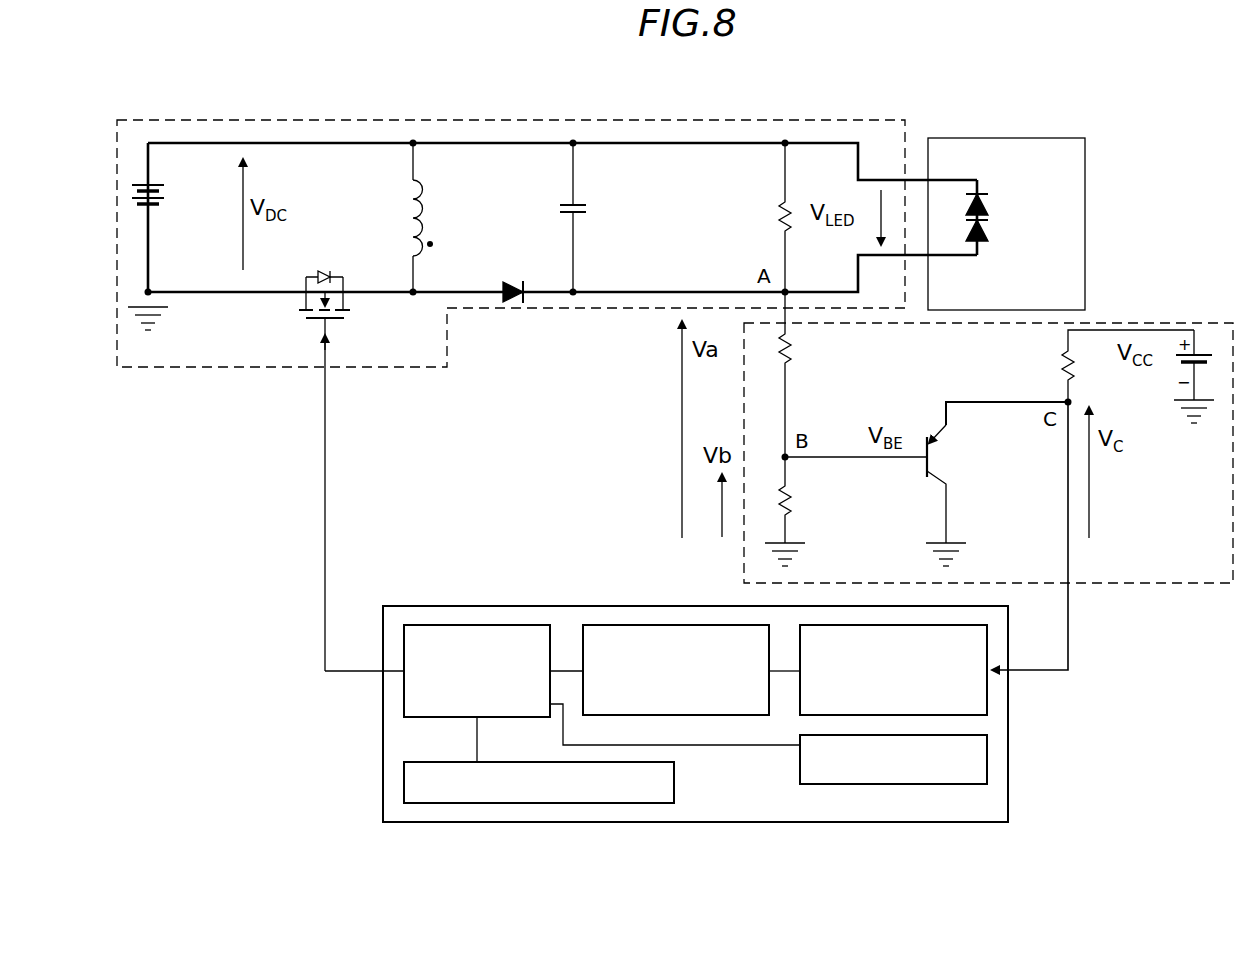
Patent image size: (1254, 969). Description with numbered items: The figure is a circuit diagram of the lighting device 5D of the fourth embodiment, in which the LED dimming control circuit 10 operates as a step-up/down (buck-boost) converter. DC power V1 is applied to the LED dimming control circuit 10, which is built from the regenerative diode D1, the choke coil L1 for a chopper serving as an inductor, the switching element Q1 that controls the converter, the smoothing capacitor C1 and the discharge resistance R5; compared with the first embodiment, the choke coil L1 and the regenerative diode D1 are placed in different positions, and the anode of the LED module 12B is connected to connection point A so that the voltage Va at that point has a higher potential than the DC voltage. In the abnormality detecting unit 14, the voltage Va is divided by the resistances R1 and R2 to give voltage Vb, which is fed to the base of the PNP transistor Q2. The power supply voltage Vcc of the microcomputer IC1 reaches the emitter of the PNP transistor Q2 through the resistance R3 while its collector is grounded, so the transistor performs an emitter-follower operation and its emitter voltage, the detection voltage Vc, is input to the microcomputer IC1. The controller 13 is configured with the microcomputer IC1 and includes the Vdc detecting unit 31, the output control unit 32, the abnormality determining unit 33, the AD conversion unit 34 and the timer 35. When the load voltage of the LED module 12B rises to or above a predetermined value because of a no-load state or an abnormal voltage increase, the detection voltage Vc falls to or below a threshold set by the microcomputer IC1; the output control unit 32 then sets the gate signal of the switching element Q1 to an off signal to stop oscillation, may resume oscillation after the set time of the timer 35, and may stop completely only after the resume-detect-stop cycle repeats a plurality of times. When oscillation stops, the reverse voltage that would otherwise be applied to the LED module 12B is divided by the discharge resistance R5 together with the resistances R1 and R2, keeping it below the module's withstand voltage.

The LED dimming control circuit 10 is at (584, 120).
The lighting device 5D is at (912, 84).
The LED module 12B is at (1018, 138).
The controller 13 is at (447, 576).
The abnormality detecting unit 14 is at (1166, 583).
The Vdc detecting unit 31 is at (404, 784).
The output control unit 32 is at (492, 625).
The abnormality determining unit 33 is at (641, 625).
The AD conversion unit 34 is at (987, 641).
The timer 35 is at (987, 761).
The microcomputer IC1 is at (1008, 721).
The DC power V1 is at (166, 187).
The switching element Q1 is at (306, 272).
The choke coil L1 is at (424, 209).
The regenerative diode D1 is at (512, 282).
The smoothing capacitor C1 is at (588, 209).
The discharge resistance R5 is at (778, 210).
The resistance R1 is at (791, 346).
The resistance R2 is at (791, 500).
The resistance R3 is at (1066, 367).
The PNP transistor Q2 is at (948, 458).